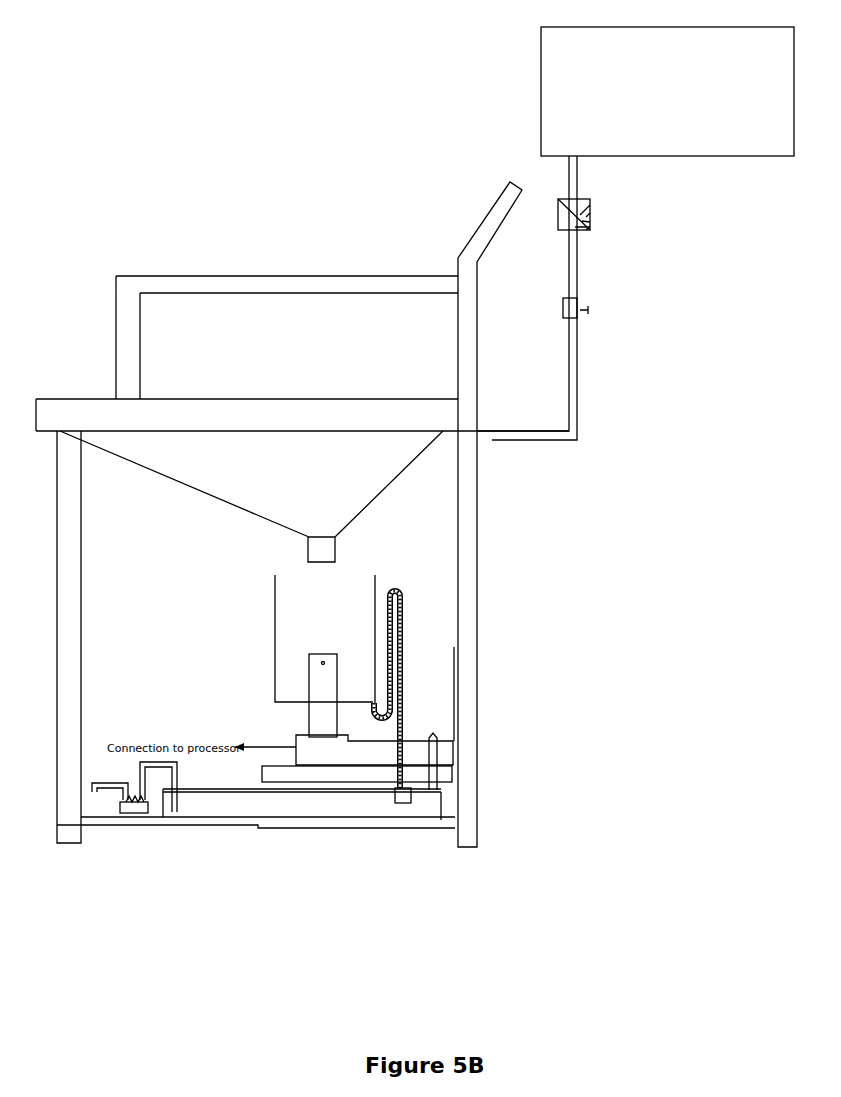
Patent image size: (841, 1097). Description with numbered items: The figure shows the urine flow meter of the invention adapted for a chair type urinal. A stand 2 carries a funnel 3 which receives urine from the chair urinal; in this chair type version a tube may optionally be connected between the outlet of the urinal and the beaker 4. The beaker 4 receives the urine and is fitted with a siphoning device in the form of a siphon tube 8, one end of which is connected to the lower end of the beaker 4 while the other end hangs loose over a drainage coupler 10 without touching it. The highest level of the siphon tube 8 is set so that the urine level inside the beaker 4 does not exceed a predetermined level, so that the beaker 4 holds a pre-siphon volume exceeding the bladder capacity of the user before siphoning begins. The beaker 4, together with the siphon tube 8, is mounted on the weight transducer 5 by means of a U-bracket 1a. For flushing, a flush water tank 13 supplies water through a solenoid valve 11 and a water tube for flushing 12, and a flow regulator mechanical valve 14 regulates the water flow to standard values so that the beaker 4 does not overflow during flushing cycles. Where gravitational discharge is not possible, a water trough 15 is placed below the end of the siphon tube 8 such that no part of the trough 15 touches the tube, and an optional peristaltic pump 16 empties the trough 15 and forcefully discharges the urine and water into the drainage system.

The U-bracket 1a is at (323, 645).
The stand 2 is at (482, 523).
The funnel 3 is at (172, 470).
The beaker 4 is at (384, 578).
The weight transducer 5 is at (452, 758).
The siphon tube 8 is at (410, 628).
The drainage coupler 10 is at (397, 812).
The solenoid valve 11 is at (592, 217).
The water tube for flushing 12 is at (582, 358).
The flush water tank 13 is at (536, 80).
The flow regulator mechanical valve 14 is at (582, 299).
The water trough 15 is at (130, 824).
The pump 16 is at (96, 800).